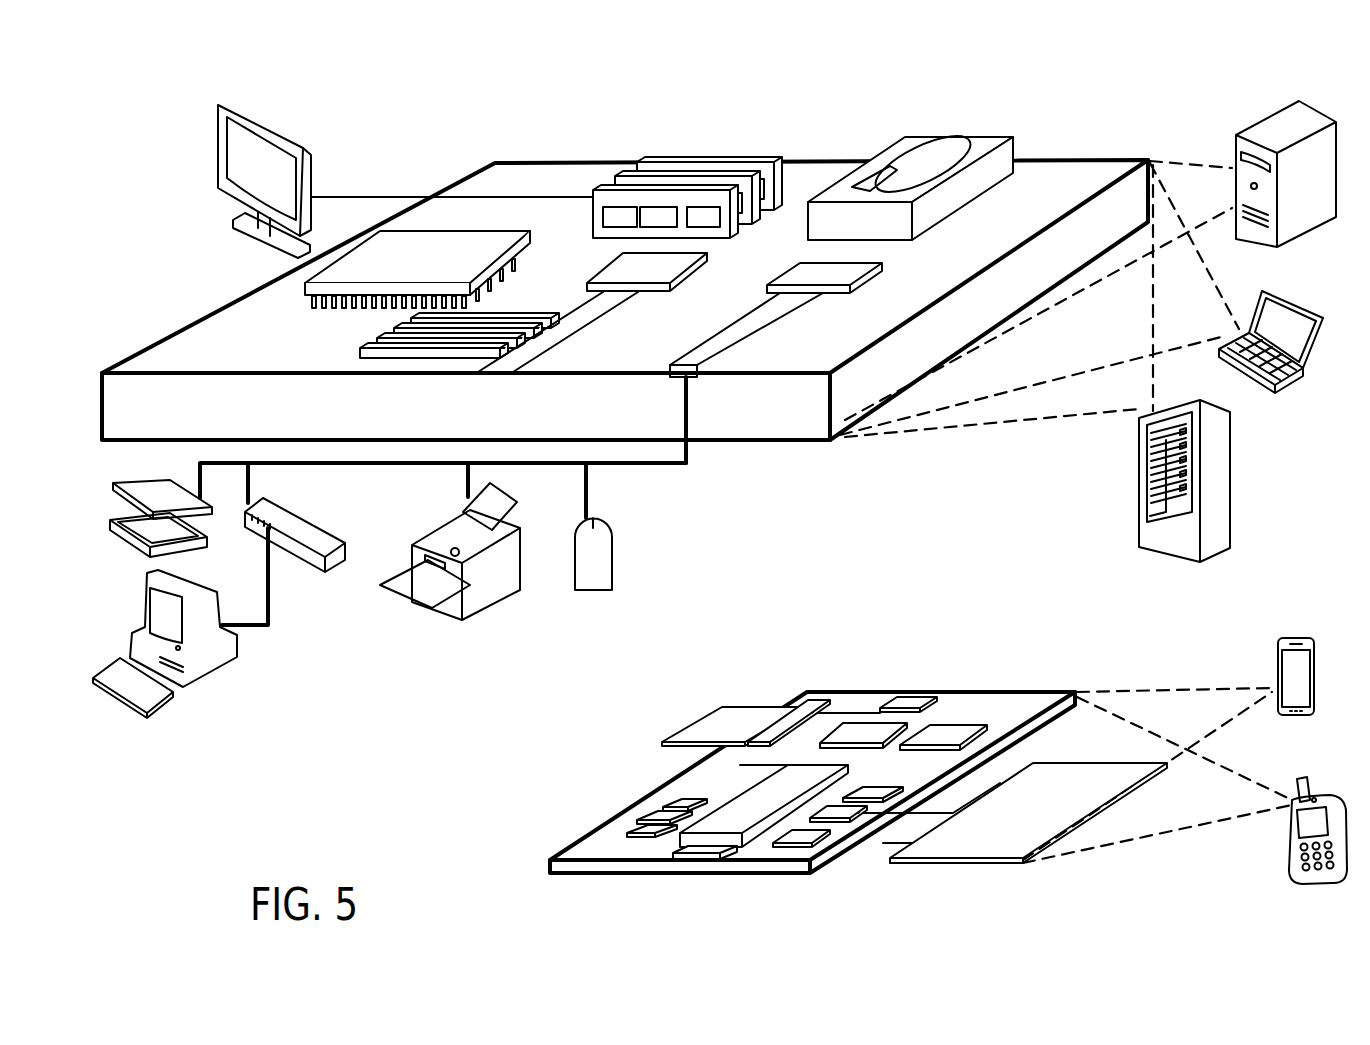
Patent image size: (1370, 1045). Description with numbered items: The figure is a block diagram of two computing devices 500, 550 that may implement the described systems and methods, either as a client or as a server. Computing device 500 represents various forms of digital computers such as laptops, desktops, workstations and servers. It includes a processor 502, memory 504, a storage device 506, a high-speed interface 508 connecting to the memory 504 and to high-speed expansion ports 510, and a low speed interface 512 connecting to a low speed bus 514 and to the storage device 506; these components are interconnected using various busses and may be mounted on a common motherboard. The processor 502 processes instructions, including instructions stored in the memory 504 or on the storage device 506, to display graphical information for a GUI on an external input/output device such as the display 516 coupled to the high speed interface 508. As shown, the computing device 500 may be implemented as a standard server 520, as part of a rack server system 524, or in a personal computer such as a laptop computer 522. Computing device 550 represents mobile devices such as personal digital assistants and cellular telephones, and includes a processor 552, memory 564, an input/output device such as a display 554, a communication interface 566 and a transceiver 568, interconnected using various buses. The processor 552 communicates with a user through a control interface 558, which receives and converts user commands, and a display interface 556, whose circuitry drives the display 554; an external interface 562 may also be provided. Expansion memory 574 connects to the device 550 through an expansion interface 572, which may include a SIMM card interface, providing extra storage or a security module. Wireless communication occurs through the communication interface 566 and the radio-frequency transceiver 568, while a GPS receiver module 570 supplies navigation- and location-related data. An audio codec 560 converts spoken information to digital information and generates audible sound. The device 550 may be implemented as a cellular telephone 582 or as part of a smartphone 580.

The computing device 500 is at (370, 70).
The processor 502 is at (305, 290).
The memory 504 is at (650, 162).
The storage device 506 is at (900, 140).
The high-speed interface 508 is at (620, 270).
The high-speed expansion ports 510 is at (377, 340).
The low speed interface 512 is at (825, 270).
The low speed bus 514 is at (692, 380).
The display 516 is at (220, 107).
The standard server 520 is at (1236, 140).
The laptop computer 522 is at (1264, 293).
The rack server system 524 is at (1139, 495).
The computing device 550 is at (783, 660).
The processor 552 is at (733, 847).
The display 554 is at (1027, 863).
The display interface 556 is at (824, 834).
The control interface 558 is at (866, 810).
The audio codec 560 is at (876, 796).
The external interface 562 is at (700, 860).
The memory 564 is at (643, 824).
The communication interface 566 is at (865, 733).
The transceiver 568 is at (943, 730).
The GPS receiver module 570 is at (903, 700).
The expansion interface 572 is at (785, 708).
The expansion memory 574 is at (715, 708).
The smartphone 580 is at (1282, 643).
The cellular telephone 582 is at (1300, 780).